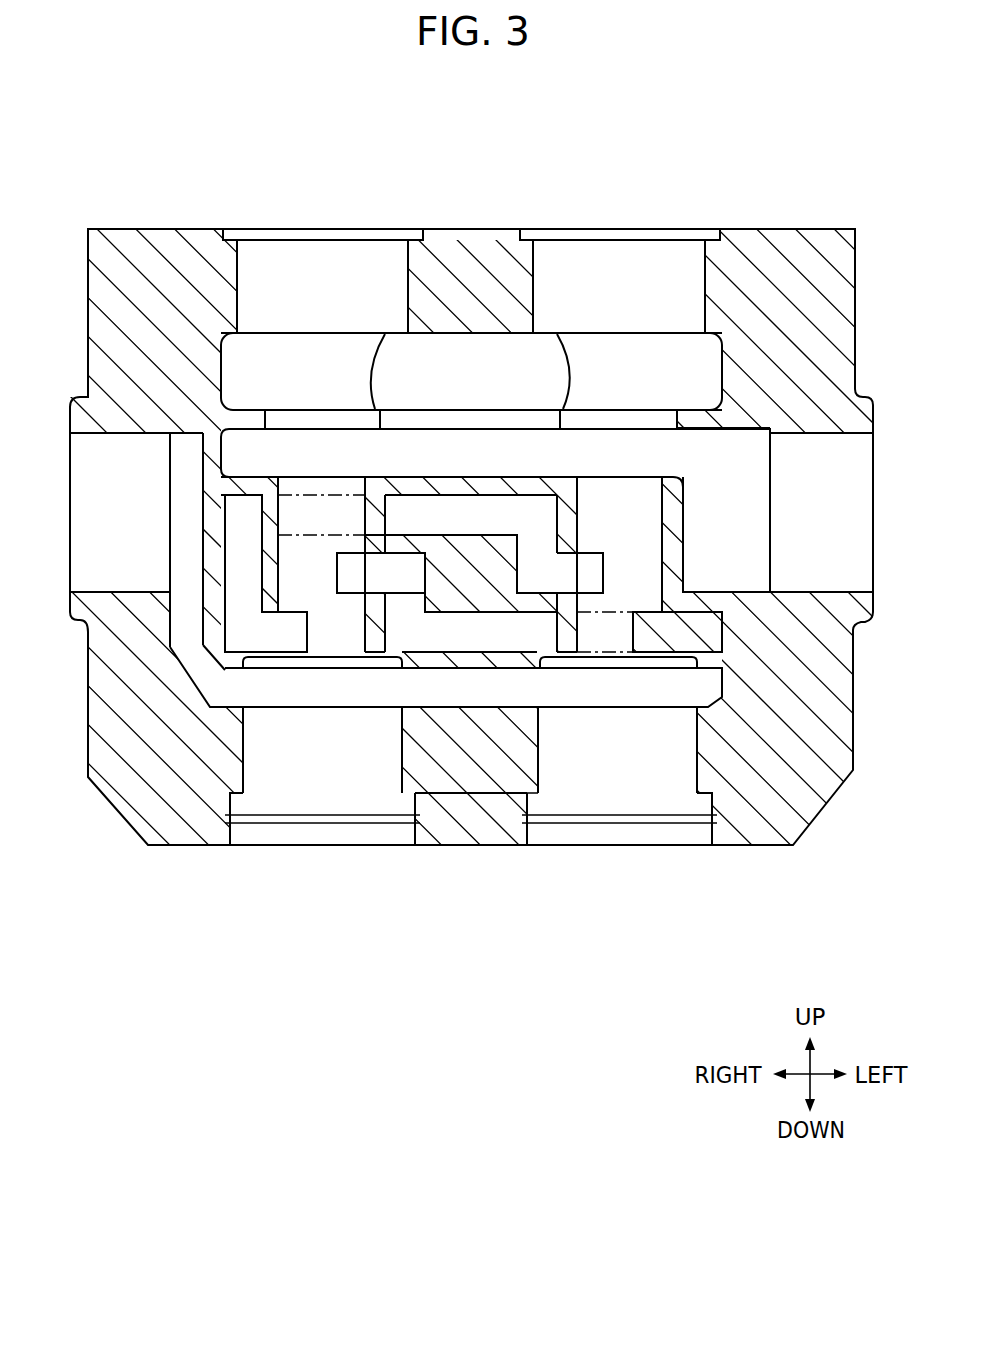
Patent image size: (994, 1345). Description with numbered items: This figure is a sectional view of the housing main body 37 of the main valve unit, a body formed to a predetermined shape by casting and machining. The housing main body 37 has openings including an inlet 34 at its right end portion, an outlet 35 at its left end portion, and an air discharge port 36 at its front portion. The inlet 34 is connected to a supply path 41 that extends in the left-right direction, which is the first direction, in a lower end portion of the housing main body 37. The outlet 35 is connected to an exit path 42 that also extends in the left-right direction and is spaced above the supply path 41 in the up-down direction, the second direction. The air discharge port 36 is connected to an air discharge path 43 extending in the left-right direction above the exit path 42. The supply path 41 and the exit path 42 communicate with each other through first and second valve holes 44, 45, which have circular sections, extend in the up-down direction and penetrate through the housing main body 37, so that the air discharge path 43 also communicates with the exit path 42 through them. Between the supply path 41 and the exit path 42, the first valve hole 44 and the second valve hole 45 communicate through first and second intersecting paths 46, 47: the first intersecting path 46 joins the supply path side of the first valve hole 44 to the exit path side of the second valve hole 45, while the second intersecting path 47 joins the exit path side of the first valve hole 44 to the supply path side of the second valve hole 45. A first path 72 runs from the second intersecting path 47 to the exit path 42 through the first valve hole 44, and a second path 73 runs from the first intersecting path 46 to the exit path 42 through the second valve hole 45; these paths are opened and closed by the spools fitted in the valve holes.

The inlet 34 is at (75, 590).
The outlet 35 is at (858, 592).
The air discharge port 36 is at (372, 387).
The housing main body 37 is at (140, 229).
The supply path 41 is at (432, 692).
The exit path 42 is at (460, 460).
The air discharge path 43 is at (695, 395).
The first valve hole 44 is at (298, 568).
The second valve hole 45 is at (648, 563).
The first intersecting path 46 is at (252, 630).
The second intersecting path 47 is at (493, 635).
The first path 72 is at (313, 500).
The second path 73 is at (625, 517).